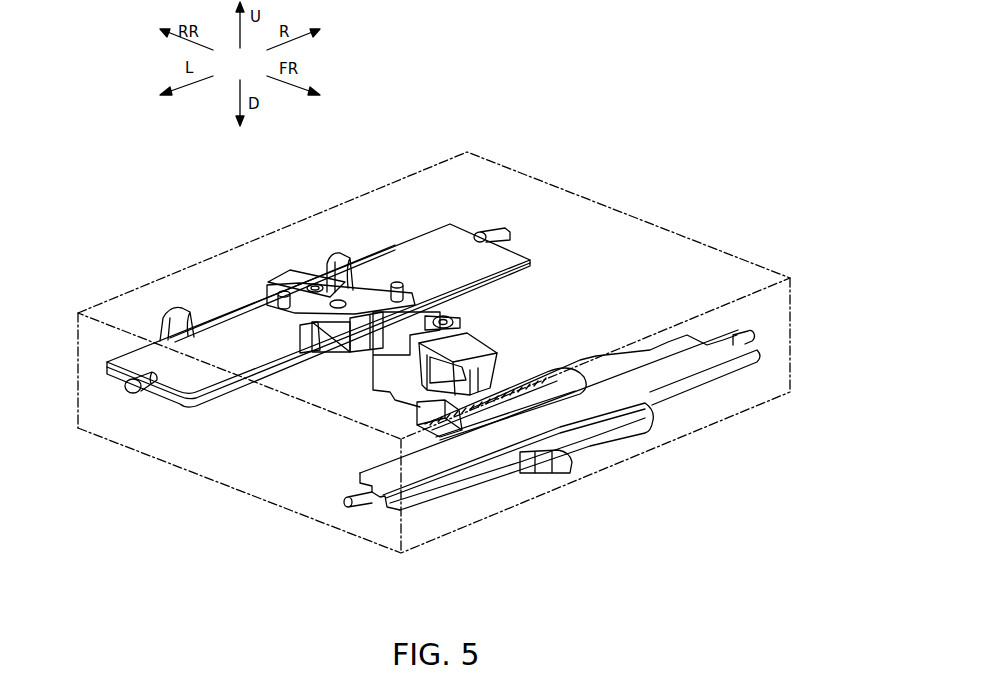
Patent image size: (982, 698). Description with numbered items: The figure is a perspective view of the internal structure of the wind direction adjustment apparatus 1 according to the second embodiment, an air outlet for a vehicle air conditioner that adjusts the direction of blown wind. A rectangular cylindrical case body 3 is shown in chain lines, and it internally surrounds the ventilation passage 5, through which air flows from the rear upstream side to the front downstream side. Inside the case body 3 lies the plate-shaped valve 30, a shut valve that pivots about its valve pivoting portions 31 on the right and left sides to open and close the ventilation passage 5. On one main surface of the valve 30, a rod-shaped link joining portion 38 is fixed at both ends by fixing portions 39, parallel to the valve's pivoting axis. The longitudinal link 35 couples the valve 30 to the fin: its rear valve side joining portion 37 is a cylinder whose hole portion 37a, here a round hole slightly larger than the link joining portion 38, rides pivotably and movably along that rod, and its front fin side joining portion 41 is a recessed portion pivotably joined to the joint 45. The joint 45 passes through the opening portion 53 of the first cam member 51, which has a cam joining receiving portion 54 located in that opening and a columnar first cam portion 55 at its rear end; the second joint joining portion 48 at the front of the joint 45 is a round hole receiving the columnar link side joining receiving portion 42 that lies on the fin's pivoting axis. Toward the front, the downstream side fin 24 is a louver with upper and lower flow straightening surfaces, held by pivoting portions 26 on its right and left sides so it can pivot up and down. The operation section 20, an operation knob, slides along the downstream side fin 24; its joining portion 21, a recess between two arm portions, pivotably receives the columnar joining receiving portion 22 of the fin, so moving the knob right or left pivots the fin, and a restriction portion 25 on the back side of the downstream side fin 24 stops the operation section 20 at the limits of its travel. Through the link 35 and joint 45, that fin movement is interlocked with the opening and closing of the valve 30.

The wind direction adjustment apparatus 1 is at (485, 118).
The case body 3 is at (576, 197).
The ventilation passage 5 is at (650, 239).
The operation section 20 is at (604, 454).
The joining portion 21 is at (494, 381).
The joining receiving portion 22 is at (488, 352).
The downstream side fin 24 is at (667, 378).
The restriction portion 25 is at (421, 424).
The pivoting portion 26 is at (356, 512).
The valve 30 is at (241, 362).
The valve pivoting portion 31 is at (132, 393).
The link 35 is at (262, 301).
The valve side joining portion 37 is at (290, 278).
The hole portion 37a is at (253, 293).
The link joining portion 38 is at (217, 313).
The fixing portion 39 is at (165, 328).
The fin side joining portion 41 is at (318, 272).
The link side joining receiving portion 42 is at (452, 320).
The joint 45 is at (370, 346).
The second joint joining portion 48 is at (452, 320).
The first cam member 51 is at (302, 337).
The opening portion 53 is at (320, 341).
The cam joining receiving portion 54 is at (343, 306).
The first cam portion 55 is at (278, 288).